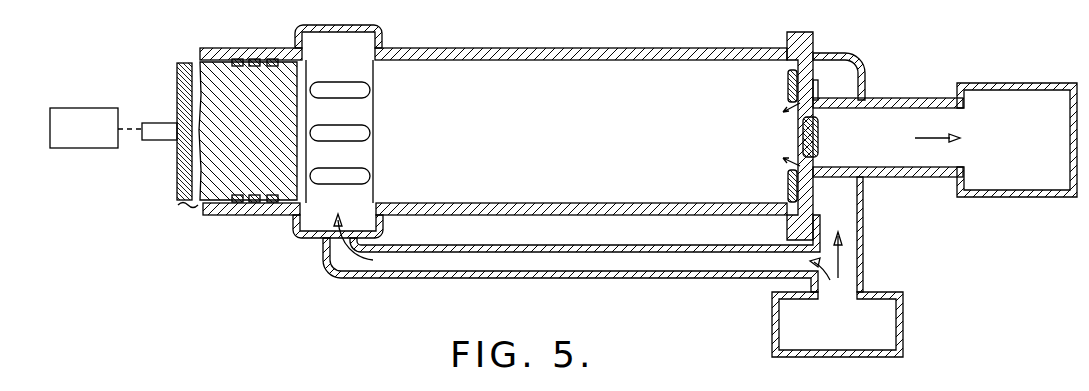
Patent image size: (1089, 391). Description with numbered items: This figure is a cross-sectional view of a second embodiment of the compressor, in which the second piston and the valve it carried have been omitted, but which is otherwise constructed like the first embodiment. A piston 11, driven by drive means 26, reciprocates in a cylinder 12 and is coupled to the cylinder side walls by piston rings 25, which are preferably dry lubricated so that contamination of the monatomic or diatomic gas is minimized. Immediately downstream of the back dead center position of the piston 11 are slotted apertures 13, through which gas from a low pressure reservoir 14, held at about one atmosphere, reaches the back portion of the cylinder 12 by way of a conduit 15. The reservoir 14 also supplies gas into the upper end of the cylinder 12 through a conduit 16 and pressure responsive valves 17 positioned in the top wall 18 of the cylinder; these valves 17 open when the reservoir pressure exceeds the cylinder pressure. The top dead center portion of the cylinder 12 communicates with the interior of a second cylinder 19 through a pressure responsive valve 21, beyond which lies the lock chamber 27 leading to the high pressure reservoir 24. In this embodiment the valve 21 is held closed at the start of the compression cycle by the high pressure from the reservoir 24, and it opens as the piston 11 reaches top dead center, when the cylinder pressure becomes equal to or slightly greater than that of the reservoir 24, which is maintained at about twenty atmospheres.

The piston 11 is at (225, 185).
The cylinder 12 is at (483, 50).
The slotted apertures 13 is at (372, 88).
The low pressure reservoir 14 is at (902, 302).
The conduit 15 is at (597, 272).
The conduit 16 is at (847, 206).
The pressure responsive valves 17 is at (788, 88).
The top wall 18 is at (812, 43).
The second cylinder 19 is at (907, 102).
The pressure responsive valve 21 is at (818, 137).
The high pressure reservoir 24 is at (1003, 190).
The piston rings 25 is at (257, 60).
The drive means 26 is at (89, 148).
The lock chamber 27 is at (865, 105).